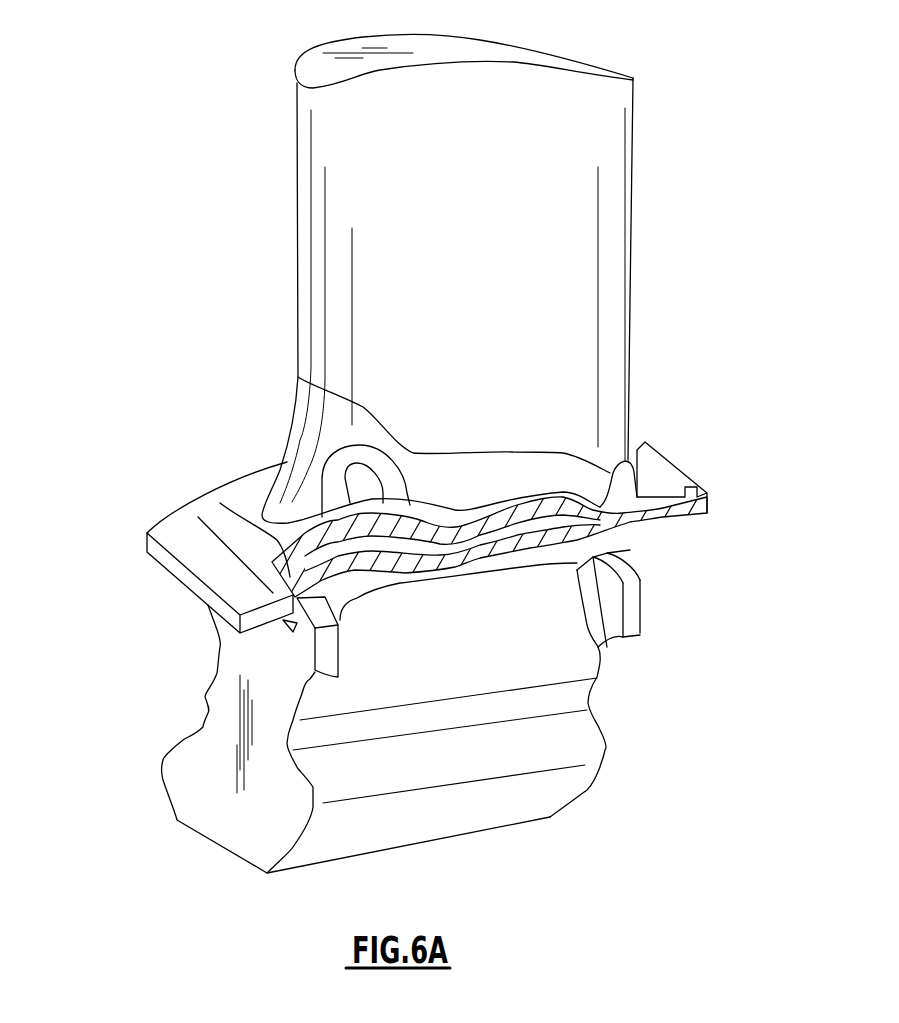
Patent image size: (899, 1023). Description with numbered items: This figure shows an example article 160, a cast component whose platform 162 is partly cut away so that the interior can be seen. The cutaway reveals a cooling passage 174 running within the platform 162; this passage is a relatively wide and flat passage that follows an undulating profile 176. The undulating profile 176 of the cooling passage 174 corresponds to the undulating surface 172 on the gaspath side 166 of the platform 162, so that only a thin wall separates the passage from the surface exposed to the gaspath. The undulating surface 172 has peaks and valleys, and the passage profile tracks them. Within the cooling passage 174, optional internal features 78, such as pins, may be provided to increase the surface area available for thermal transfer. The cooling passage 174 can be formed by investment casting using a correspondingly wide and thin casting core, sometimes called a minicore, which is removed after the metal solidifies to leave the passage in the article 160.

The article 160 is at (140, 467).
The platform 162 is at (712, 503).
The gaspath side 166 is at (233, 524).
The undulating surface 172 is at (258, 544).
The cooling passage 174 is at (633, 517).
The undulating profile 176 is at (443, 540).
The internal features 78 is at (523, 557).